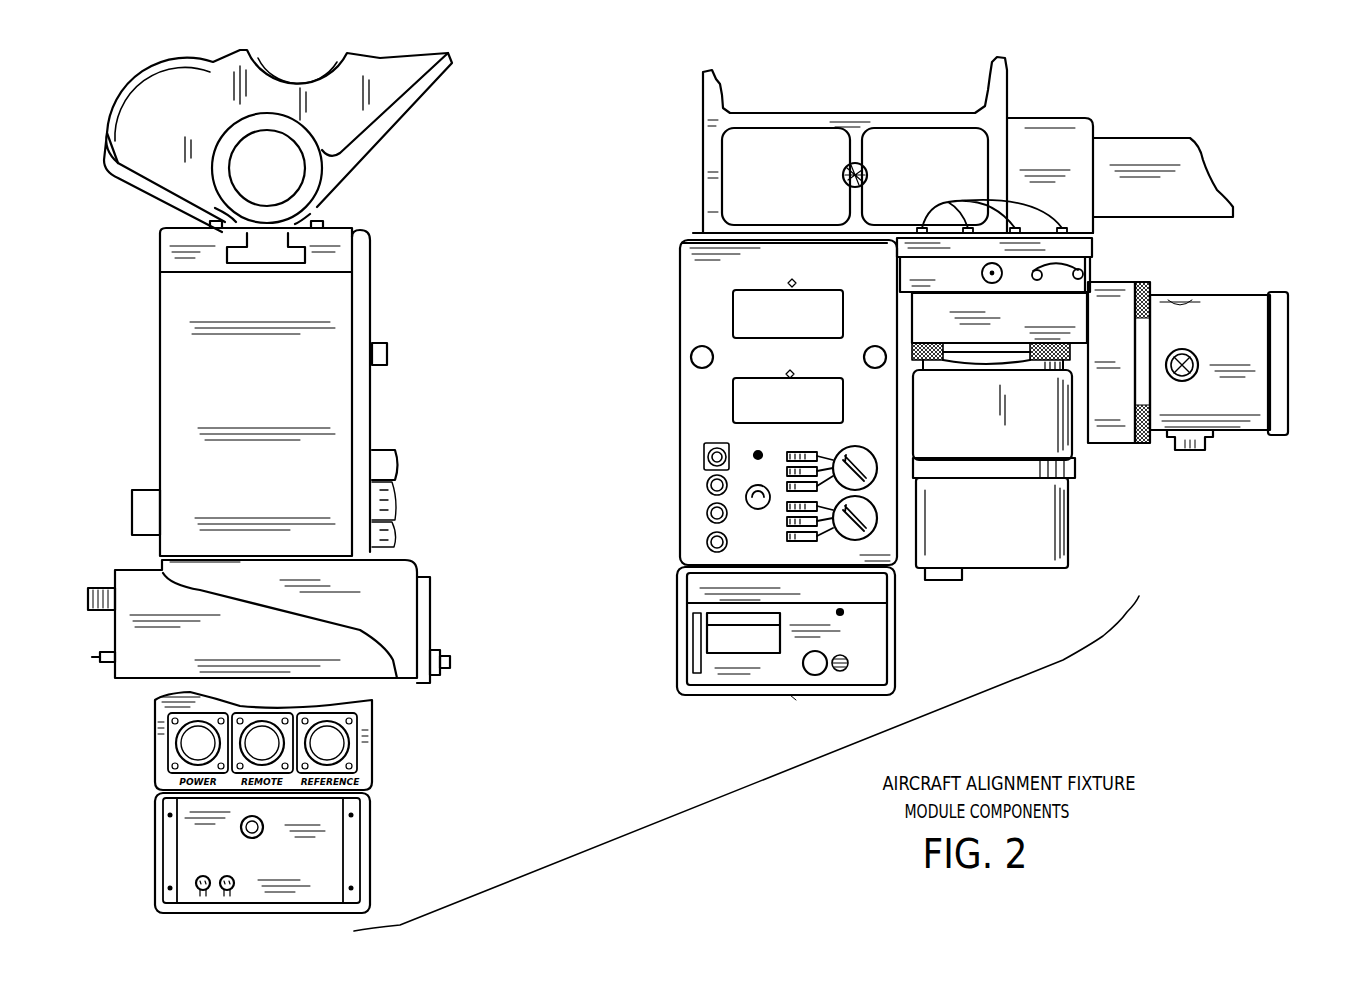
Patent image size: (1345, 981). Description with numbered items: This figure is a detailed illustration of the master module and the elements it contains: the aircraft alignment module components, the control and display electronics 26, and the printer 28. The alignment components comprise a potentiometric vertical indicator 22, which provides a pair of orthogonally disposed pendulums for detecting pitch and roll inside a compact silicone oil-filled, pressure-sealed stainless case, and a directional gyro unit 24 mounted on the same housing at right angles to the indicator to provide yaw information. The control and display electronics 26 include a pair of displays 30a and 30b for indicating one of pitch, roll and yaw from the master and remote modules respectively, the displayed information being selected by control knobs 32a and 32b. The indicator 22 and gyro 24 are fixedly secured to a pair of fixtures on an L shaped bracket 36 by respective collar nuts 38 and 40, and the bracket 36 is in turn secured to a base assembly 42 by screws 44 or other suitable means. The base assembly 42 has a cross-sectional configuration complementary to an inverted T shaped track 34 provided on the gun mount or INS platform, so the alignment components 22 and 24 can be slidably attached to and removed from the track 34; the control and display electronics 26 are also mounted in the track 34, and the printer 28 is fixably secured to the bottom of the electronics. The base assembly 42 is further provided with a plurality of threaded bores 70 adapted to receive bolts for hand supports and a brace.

The potentiometric vertical indicator 22 is at (1222, 398).
The directional gyro unit 24 is at (972, 540).
The control and display electronics 26 is at (243, 389).
The printer 28 is at (203, 643).
The display 30a is at (833, 312).
The display 30b is at (832, 403).
The control knob 32a is at (835, 447).
The control knob 32b is at (842, 543).
The inverted T shaped track 34 is at (255, 255).
The L shaped bracket 36 is at (1011, 318).
The collar nut 38 is at (1150, 290).
The collar nut 40 is at (957, 350).
The base assembly 42 is at (977, 273).
The screws 44 is at (948, 202).
The threaded bores 70 is at (1033, 271).